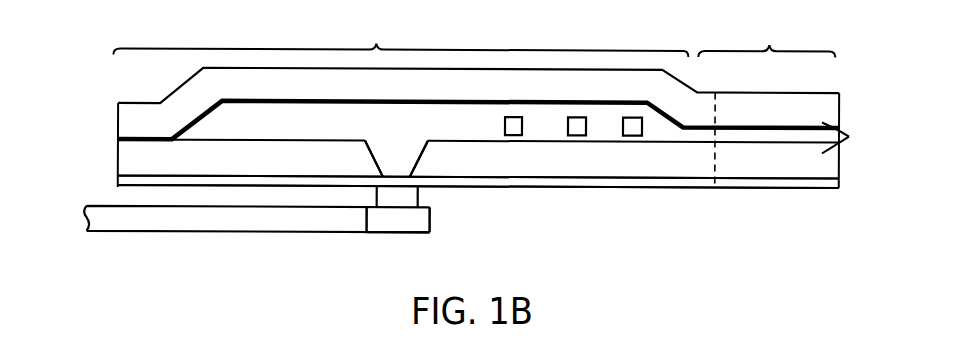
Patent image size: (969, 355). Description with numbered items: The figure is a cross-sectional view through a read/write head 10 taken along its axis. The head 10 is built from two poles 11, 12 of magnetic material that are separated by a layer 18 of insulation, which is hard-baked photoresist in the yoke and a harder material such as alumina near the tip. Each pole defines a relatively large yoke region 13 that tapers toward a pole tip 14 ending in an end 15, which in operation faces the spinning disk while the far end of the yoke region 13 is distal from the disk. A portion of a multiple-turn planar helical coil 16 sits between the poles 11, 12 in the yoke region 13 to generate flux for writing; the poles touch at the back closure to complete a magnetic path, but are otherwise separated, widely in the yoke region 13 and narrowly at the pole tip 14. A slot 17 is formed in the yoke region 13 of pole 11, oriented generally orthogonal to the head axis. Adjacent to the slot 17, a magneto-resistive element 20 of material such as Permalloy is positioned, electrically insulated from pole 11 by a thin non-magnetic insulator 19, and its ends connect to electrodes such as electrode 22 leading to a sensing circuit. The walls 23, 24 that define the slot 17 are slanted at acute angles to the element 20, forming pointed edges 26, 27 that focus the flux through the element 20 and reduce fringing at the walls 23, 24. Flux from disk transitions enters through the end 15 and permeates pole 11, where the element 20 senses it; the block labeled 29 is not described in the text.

The read/write head 10 is at (76, 87).
The pole 11 is at (128, 160).
The pole 12 is at (134, 110).
The yoke region 13 is at (400, 31).
The pole tip 14 is at (767, 102).
The end 15 is at (851, 137).
The multiple-turn planar helical coil 16 is at (635, 119).
The slot 17 is at (397, 157).
The layer of insulation 18 is at (662, 132).
The non-magnetic insulator 19 is at (773, 182).
The magneto-resistive element 20 is at (418, 197).
The electrode 22 is at (208, 222).
The wall 23 is at (372, 165).
The wall 24 is at (425, 152).
The pointed edge 26 is at (384, 172).
The pointed edge 27 is at (409, 172).
The support block 29 is at (402, 222).